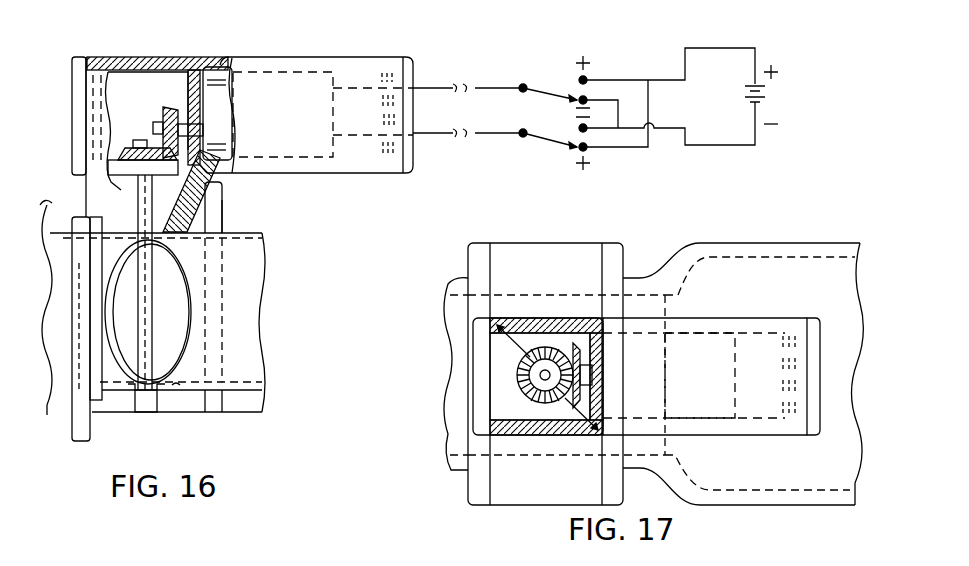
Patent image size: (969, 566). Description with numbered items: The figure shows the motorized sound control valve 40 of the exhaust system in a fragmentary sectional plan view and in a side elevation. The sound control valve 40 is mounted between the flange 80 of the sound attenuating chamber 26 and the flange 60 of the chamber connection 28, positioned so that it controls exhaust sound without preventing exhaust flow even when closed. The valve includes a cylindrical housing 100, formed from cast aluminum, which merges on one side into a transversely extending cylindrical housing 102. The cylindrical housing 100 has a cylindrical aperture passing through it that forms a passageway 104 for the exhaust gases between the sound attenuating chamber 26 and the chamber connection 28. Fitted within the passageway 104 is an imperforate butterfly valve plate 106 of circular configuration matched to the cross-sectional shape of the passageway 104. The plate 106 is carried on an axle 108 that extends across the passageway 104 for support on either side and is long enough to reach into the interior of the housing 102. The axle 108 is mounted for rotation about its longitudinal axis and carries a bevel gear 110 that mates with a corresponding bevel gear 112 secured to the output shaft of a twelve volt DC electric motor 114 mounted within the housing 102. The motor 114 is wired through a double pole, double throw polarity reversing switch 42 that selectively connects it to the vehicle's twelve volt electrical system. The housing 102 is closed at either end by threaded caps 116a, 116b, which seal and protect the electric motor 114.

In FIG. 16, the sound attenuating chamber 26 is at (47, 203).
In FIG. 17, the sound attenuating chamber 26 is at (717, 240).
In FIG. 17, the chamber connection 28 is at (452, 282).
In FIG. 16, the sound control valve 40 is at (188, 55).
In FIG. 16, the polarity reversing switch 42 is at (627, 54).
In FIG. 16, the flange 60 is at (225, 222).
In FIG. 17, the flange 60 is at (470, 258).
In FIG. 16, the flange 80 is at (76, 184).
In FIG. 17, the flange 80 is at (606, 272).
In FIG. 16, the cylindrical housing 100 is at (212, 212).
In FIG. 17, the cylindrical housing 100 is at (548, 250).
In FIG. 16, the cylindrical housing 102 is at (290, 62).
In FIG. 17, the cylindrical housing 102 is at (729, 324).
In FIG. 16, the passageway 104 is at (195, 405).
In FIG. 16, the butterfly valve plate 106 is at (135, 323).
In FIG. 17, the butterfly valve plate 106 is at (500, 358).
In FIG. 16, the axle 108 is at (140, 205).
In FIG. 16, the bevel gear 110 is at (143, 140).
In FIG. 17, the bevel gear 110 is at (548, 346).
In FIG. 16, the bevel gear 112 is at (163, 118).
In FIG. 17, the bevel gear 112 is at (575, 352).
In FIG. 16, the electric motor 114 is at (255, 68).
In FIG. 17, the electric motor 114 is at (706, 421).
In FIG. 16, the threaded cap 116a is at (73, 75).
In FIG. 17, the threaded cap 116a is at (483, 395).
In FIG. 16, the threaded cap 116b is at (418, 82).
In FIG. 17, the threaded cap 116b is at (815, 320).